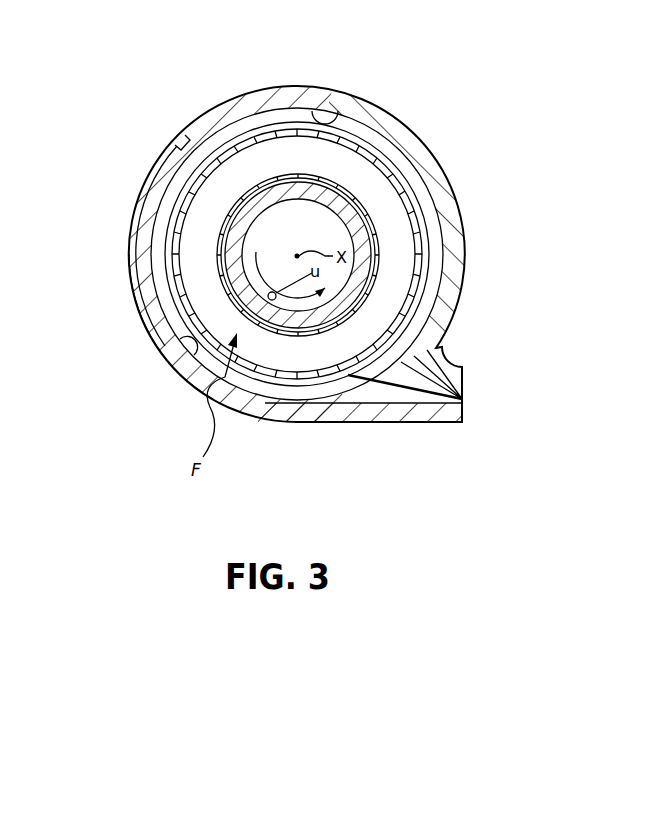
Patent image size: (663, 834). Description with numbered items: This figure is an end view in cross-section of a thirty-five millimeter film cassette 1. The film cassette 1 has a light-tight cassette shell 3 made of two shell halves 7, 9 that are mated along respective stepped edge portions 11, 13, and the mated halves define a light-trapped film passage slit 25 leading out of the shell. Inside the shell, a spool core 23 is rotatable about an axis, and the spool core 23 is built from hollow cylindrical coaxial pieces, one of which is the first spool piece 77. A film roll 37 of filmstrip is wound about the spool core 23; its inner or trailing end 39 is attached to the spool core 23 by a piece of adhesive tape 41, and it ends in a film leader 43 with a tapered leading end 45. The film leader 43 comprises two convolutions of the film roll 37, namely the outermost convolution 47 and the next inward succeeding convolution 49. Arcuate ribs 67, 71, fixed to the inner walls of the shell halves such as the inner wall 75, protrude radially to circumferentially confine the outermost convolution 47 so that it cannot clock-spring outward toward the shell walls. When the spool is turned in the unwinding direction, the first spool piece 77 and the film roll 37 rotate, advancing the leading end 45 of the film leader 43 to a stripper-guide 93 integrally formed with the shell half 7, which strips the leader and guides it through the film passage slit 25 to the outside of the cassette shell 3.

The film cassette 1 is at (205, 88).
The cassette shell 3 is at (197, 115).
The shell half 7 is at (160, 341).
The shell half 9 is at (400, 123).
The stepped edge portion 11 is at (177, 148).
The stepped edge portion 13 is at (162, 160).
The spool core 23 is at (262, 408).
The film passage slit 25 is at (464, 400).
The film roll 37 is at (412, 182).
The trailing end 39 is at (245, 210).
The adhesive tape 41 is at (262, 208).
The film leader 43 is at (178, 181).
The leading end 45 is at (330, 393).
The outermost convolution 47 is at (178, 247).
The next inward succeeding convolution 49 is at (168, 270).
The arcuate rib 67 is at (277, 318).
The arcuate rib 71 is at (433, 250).
The inner wall 75 is at (306, 110).
The first spool piece 77 is at (355, 228).
The stripper-guide 93 is at (392, 402).